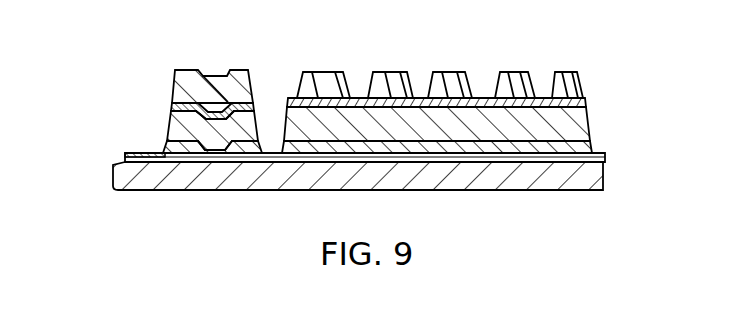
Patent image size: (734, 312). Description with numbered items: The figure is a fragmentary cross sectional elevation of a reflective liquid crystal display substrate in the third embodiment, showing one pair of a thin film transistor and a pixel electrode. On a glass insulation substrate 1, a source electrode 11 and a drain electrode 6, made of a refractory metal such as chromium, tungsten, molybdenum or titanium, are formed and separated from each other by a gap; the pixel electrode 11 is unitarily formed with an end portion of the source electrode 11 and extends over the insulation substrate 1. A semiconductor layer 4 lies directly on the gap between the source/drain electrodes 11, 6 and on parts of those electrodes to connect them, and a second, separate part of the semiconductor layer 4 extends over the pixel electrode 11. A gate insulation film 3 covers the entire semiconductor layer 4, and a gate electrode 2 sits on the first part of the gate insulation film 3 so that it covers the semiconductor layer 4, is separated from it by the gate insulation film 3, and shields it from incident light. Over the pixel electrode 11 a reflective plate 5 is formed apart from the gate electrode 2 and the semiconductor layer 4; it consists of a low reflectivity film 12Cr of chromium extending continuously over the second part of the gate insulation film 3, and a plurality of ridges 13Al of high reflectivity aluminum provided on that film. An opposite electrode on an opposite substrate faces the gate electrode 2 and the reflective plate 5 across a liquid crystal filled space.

The insulation substrate 1 is at (603, 183).
The source electrode / pixel electrode 11 is at (603, 160).
The drain electrode 6 is at (127, 159).
The semiconductor layer 4 is at (163, 150).
The gate insulation film 3 is at (170, 127).
The gate electrode 2 is at (162, 70).
The reflective plate 5 is at (502, 62).
The low reflectivity film 12Cr is at (584, 106).
The ridges 13Al is at (523, 80).